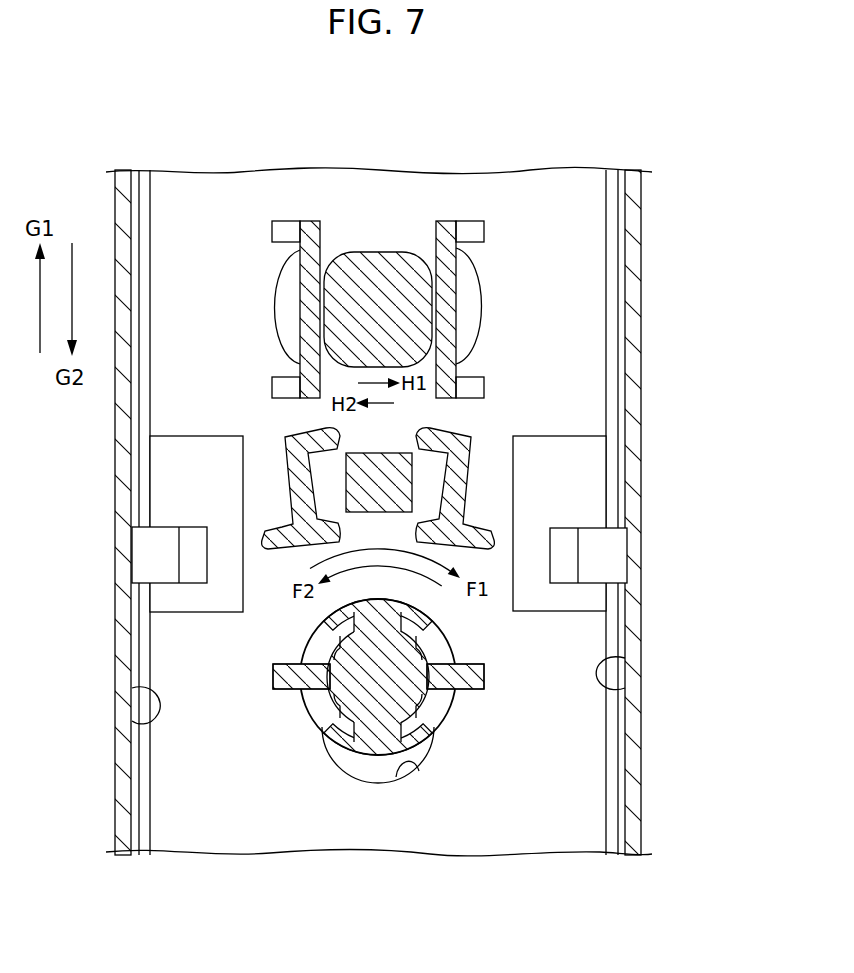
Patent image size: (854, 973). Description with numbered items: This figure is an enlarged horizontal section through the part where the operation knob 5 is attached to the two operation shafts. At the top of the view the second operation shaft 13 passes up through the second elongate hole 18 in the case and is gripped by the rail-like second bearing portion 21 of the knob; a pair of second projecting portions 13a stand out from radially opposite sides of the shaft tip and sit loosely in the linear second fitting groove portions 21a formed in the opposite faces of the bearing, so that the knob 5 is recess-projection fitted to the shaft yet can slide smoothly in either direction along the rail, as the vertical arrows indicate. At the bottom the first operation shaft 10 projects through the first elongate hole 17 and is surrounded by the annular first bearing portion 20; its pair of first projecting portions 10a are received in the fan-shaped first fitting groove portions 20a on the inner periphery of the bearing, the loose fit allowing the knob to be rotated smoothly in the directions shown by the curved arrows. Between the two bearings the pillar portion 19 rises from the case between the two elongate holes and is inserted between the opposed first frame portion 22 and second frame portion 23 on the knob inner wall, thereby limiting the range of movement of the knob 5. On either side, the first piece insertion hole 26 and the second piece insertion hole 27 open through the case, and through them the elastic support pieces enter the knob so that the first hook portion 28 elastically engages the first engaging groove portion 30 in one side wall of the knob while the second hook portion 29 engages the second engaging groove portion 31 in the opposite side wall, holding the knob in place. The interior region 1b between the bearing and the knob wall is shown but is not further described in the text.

The operation knob 5 is at (636, 192).
The internal space 1b is at (578, 330).
The second operation shaft 13 is at (379, 227).
The second projecting portions 13a is at (315, 310).
The second elongate hole 18 is at (467, 287).
The second bearing portion 21 is at (482, 250).
The second fitting groove portions 21a is at (313, 246).
The first frame portion 22 is at (300, 458).
The second frame portion 23 is at (463, 458).
The pillar portion 19 is at (377, 483).
The first piece insertion hole 26 is at (193, 612).
The second piece insertion hole 27 is at (578, 438).
The first hook portion 28 is at (190, 557).
The second hook portion 29 is at (613, 558).
The first engaging groove portion 30 is at (130, 713).
The second engaging groove portion 31 is at (632, 683).
The first operation shaft 10 is at (400, 693).
The first projecting portions 10a is at (385, 747).
The first bearing portion 20 is at (373, 750).
The first fitting groove portions 20a is at (300, 660).
The first elongate hole 17 is at (396, 768).